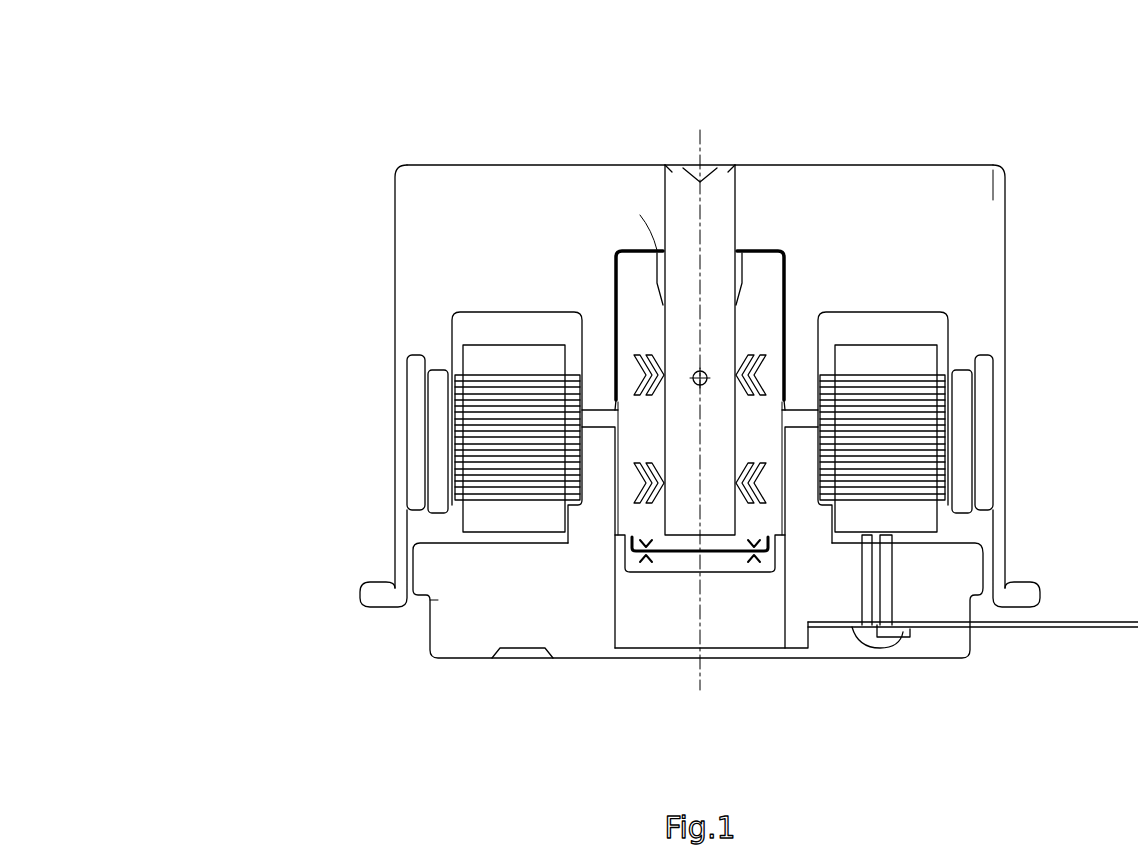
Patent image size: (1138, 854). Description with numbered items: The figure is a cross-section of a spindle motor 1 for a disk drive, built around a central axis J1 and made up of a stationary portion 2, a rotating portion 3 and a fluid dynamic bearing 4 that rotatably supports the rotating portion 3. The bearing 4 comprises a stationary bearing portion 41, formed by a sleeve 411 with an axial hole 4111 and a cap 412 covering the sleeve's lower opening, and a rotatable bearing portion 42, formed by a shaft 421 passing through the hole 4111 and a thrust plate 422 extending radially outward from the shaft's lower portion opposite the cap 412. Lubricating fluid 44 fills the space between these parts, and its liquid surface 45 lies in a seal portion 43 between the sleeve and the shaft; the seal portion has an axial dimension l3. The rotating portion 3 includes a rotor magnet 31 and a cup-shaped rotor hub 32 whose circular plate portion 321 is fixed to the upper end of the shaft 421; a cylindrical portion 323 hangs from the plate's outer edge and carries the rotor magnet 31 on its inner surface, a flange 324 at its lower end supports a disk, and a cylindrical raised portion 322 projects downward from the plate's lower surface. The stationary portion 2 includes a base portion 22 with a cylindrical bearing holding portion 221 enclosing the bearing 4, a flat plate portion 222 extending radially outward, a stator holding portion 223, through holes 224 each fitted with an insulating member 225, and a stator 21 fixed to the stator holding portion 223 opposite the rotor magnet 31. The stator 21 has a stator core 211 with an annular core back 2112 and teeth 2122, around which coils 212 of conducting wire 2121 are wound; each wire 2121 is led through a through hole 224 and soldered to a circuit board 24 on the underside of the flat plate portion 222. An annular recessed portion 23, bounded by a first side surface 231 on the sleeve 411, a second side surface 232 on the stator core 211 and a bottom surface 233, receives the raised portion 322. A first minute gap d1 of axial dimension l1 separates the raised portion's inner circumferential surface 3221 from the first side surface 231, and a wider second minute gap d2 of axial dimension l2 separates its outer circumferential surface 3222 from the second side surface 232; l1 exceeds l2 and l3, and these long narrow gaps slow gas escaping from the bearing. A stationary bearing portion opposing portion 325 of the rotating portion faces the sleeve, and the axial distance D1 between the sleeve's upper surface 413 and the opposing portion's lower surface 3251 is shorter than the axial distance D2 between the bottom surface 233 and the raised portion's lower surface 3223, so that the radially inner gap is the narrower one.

The motor 1 is at (426, 104).
The stationary portion 2 is at (342, 681).
The rotating portion 3 is at (983, 70).
The fluid dynamic bearing 4 is at (644, 592).
The stator 21 is at (617, 539).
The stator core 211 is at (316, 392).
The coils 212 is at (447, 487).
The core back 2112 is at (580, 425).
The teeth 2122 is at (560, 432).
The conducting wire 2121 is at (903, 633).
The base portion 22 is at (685, 638).
The bearing holding portion 221 is at (600, 520).
The flat plate portion 222 is at (507, 560).
The stator holding portion 223 is at (547, 520).
The through hole 224 is at (985, 512).
The insulating member 225 is at (983, 547).
The recessed portion 23 is at (699, 408).
The first side surface 231 is at (847, 457).
The second side surface 232 is at (847, 423).
The bottom surface 233 is at (830, 487).
The circuit board 24 is at (1053, 628).
The rotor magnet 31 is at (990, 345).
The rotor hub 32 is at (735, 348).
The circular plate portion 321 is at (870, 183).
The raised portion 322 is at (1040, 212).
The cylindrical portion 323 is at (988, 197).
The flange 324 is at (1027, 590).
The stationary bearing portion opposing portion 325 is at (937, 160).
The lower surface 3251 is at (640, 215).
The inner circumferential surface 3221 is at (820, 300).
The outer circumferential surface 3222 is at (833, 307).
The lower surface 3223 is at (850, 330).
The stationary bearing portion 41 is at (729, 421).
The sleeve 411 is at (763, 497).
The hole 4111 is at (683, 262).
The cap 412 is at (767, 520).
The upper surface 413 is at (650, 248).
The rotatable bearing portion 42 is at (706, 636).
The shaft 421 is at (640, 545).
The thrust plate 422 is at (688, 520).
The seal portion 43 is at (745, 252).
The lubricating fluid 44 is at (790, 335).
The liquid surface 45 is at (760, 250).
The central axis J1 is at (706, 152).
The axial distance D1 is at (632, 278).
The axial distance D2 is at (590, 392).
The first minute gap d1 is at (791, 354).
The second minute gap d2 is at (791, 387).
The axial dimension of first minute gap l1 is at (625, 402).
The axial dimension of second minute gap l2 is at (628, 410).
The axial dimension of seal portion l3 is at (648, 255).